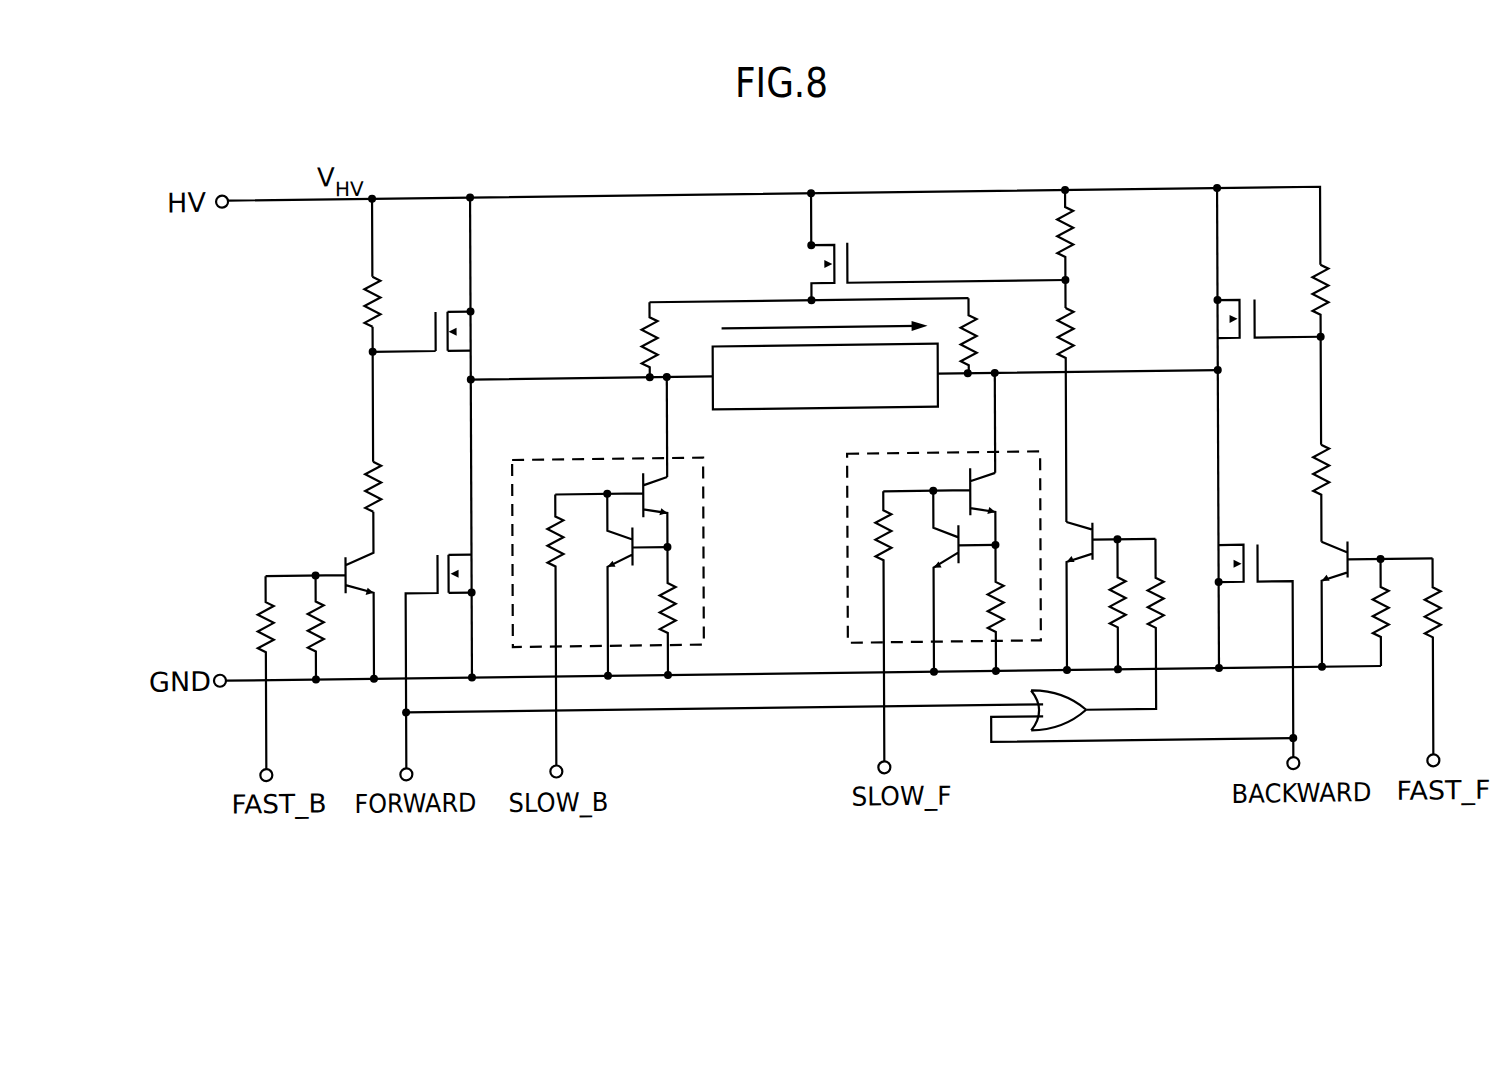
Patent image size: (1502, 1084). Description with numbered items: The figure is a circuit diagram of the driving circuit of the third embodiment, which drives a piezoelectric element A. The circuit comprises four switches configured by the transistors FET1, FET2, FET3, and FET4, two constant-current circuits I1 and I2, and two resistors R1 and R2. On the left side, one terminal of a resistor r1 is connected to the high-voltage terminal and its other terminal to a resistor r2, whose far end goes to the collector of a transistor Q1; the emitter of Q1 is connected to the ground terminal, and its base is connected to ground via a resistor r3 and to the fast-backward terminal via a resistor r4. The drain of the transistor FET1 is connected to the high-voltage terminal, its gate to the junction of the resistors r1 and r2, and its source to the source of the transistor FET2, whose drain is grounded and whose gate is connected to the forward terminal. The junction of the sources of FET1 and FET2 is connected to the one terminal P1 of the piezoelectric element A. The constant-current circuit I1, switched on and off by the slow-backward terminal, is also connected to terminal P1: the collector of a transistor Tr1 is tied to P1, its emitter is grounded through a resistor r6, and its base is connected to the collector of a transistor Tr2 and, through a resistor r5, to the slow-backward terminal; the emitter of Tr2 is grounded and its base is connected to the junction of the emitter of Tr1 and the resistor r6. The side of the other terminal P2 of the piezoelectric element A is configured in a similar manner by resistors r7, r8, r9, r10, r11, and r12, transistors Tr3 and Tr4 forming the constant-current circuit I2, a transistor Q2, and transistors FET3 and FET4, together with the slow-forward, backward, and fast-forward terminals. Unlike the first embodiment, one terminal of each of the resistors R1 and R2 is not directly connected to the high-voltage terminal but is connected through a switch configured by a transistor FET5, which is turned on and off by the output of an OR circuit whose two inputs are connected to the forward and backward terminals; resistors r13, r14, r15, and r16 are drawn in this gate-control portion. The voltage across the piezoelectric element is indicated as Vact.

The resistor r1 is at (354, 302).
The resistor r2 is at (355, 487).
The resistor r3 is at (333, 627).
The resistor r4 is at (247, 679).
The resistor r5 is at (540, 636).
The resistor r6 is at (651, 611).
The resistor r7 is at (1302, 355).
The resistor r8 is at (1302, 494).
The resistor r9 is at (1365, 613).
The resistor r10 is at (1455, 662).
The resistor r11 is at (870, 621).
The resistor r12 is at (980, 608).
The resistor r13 is at (1049, 249).
The resistor r14 is at (1050, 415).
The resistor r15 is at (1101, 604).
The resistor r16 is at (1139, 623).
The resistor R1 is at (631, 340).
The resistor R2 is at (987, 336).
The transistor FET1 is at (440, 328).
The transistor FET2 is at (455, 661).
The transistor FET3 is at (1250, 307).
The transistor FET4 is at (1241, 639).
The transistor FET5 is at (938, 245).
The transistor Q1 is at (335, 595).
The transistor Q2 is at (1362, 604).
The transistor Tr1 is at (628, 511).
The transistor Tr2 is at (622, 584).
The transistor Tr3 is at (960, 506).
The transistor Tr4 is at (950, 581).
The one terminal of the piezoelectric element P1 is at (650, 386).
The terminal P2 of piezoelectric element P2 is at (972, 386).
The piezoelectric element A is at (838, 410).
The constant-current circuit I1 is at (568, 456).
The constant-current circuit I2 is at (1025, 454).
The actuation voltage across piezoelectric element Vact is at (824, 317).